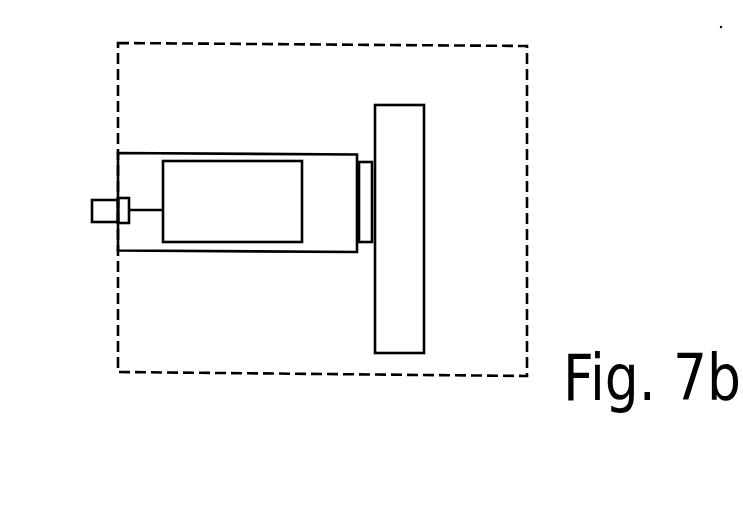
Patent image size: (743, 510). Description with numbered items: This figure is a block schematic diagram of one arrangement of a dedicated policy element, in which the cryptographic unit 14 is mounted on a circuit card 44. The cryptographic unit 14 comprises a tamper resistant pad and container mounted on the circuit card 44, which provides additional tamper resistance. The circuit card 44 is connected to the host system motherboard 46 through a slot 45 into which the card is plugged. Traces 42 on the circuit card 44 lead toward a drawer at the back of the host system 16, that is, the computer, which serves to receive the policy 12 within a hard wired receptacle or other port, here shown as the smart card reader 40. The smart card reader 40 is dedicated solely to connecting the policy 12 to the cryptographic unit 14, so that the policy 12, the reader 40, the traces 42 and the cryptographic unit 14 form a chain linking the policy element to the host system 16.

The policy 12 is at (105, 200).
The cryptographic unit 14 is at (208, 175).
The host system 16 is at (209, 373).
The smart card reader 40 is at (122, 198).
The traces 42 is at (152, 212).
The circuit card 44 is at (318, 154).
The slot 45 is at (363, 252).
The host system motherboard 46 is at (425, 335).